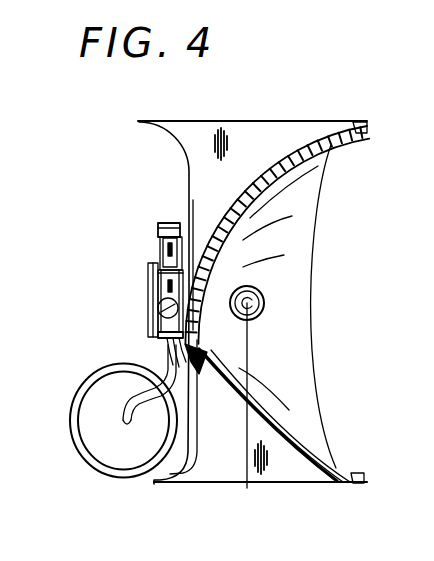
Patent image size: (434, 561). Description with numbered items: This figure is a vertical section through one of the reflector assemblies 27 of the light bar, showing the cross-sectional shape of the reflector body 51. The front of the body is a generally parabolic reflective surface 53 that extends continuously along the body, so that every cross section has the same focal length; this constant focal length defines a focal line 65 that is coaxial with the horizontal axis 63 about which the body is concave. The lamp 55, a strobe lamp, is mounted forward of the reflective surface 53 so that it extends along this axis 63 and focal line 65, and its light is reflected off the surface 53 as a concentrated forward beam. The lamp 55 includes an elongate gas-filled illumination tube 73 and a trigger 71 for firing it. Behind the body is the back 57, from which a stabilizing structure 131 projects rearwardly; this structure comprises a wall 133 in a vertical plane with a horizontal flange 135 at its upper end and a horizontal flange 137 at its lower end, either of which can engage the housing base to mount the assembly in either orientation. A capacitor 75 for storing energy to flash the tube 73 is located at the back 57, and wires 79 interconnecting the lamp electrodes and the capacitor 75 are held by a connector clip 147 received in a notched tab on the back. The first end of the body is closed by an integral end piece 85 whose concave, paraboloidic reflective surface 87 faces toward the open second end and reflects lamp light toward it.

The reflector assembly 27 is at (112, 233).
The reflector body 51 is at (264, 178).
The reflective surface 53 is at (278, 436).
The lamp 55 is at (264, 316).
The back 57 is at (302, 147).
The horizontal axis 63 is at (324, 287).
The focal line 65 is at (262, 292).
The trigger 71 is at (235, 301).
The illumination tube 73 is at (262, 280).
The capacitor 75 is at (96, 371).
The wires 79 is at (165, 352).
The end piece 85 is at (288, 362).
The concave reflective surface 87 is at (295, 201).
The stabilizing structure 131 is at (184, 163).
The wall 133 is at (200, 197).
The horizontal flange 135 is at (242, 120).
The horizontal flange 137 is at (247, 484).
The connector clip 147 is at (157, 251).